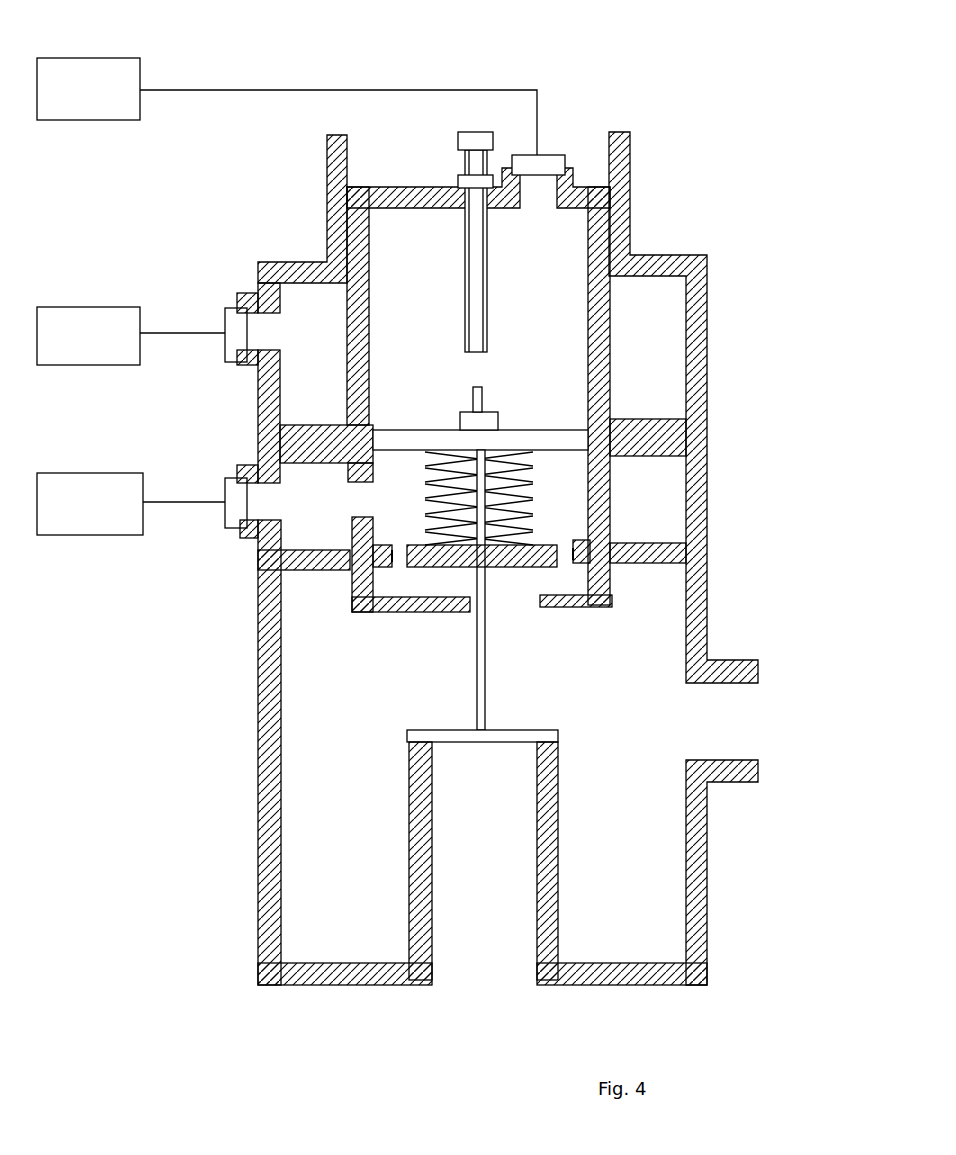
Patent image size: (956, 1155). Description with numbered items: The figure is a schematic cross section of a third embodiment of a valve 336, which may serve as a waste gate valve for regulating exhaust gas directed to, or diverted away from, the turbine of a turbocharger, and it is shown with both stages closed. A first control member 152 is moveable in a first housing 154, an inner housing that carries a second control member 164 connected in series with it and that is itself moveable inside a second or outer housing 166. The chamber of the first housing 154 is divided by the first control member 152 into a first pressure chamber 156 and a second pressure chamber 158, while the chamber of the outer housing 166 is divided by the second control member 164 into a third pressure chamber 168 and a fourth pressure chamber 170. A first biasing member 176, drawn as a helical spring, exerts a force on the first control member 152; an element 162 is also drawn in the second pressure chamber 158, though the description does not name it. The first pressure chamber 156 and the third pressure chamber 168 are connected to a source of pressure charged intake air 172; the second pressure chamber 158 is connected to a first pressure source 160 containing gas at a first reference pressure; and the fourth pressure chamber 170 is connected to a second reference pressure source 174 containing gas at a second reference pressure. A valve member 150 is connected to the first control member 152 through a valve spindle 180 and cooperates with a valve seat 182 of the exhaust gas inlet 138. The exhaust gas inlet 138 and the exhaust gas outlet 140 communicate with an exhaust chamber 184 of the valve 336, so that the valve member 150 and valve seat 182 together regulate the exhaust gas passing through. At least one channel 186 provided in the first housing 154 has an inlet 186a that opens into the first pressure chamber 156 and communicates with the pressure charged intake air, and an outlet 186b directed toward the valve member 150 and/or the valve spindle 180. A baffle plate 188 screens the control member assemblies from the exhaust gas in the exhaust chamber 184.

The first pressure source 160 is at (63, 58).
The second reference pressure source 174 is at (63, 307).
The source of pressure charged intake air 172 is at (63, 473).
The valve 336 is at (695, 155).
The fourth pressure chamber 170 is at (330, 344).
The third pressure chamber 168 is at (330, 515).
The second pressure chamber 158 is at (555, 252).
The adjustment bolt 162 is at (475, 300).
The first housing 154 is at (600, 336).
The second housing 166 is at (707, 391).
The second control member 164 is at (660, 436).
The first biasing member 176 is at (585, 513).
The first control member 152 is at (537, 440).
The first pressure chamber 156 is at (562, 470).
The valve spindle 180 is at (488, 680).
The channel 186 is at (395, 560).
The inlet 186a is at (393, 548).
The outlet 186b is at (397, 562).
The baffle plate 188 is at (578, 600).
The valve member 150 is at (505, 738).
The valve seat 182 is at (410, 775).
The exhaust chamber 184 is at (645, 905).
The exhaust gas outlet 140 is at (760, 728).
The exhaust gas inlet 138 is at (485, 983).